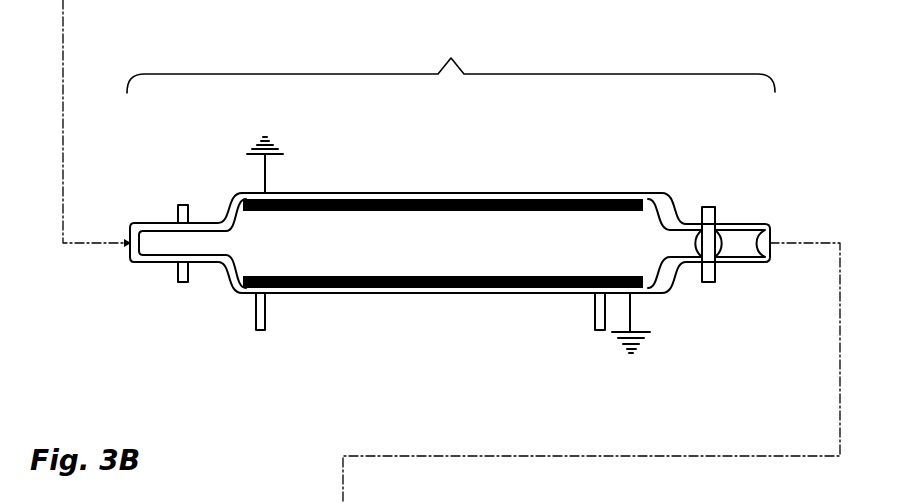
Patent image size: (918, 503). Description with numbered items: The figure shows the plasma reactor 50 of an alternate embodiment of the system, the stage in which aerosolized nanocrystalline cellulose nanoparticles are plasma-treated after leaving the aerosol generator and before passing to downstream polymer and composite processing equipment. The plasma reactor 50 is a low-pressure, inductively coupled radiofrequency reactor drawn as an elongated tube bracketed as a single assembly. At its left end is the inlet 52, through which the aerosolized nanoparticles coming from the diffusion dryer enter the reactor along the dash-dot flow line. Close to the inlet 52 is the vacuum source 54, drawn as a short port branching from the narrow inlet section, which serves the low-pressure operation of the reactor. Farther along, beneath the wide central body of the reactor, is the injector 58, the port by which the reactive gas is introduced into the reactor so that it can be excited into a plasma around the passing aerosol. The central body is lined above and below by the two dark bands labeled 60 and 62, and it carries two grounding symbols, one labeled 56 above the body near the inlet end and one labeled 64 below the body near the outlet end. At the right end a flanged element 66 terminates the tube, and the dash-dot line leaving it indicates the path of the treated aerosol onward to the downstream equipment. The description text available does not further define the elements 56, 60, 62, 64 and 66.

The plasma reactor 50 is at (451, 65).
The inlet 52 is at (152, 248).
The vacuum source 54 is at (183, 195).
The ground connection 56 is at (272, 138).
The injector 58 is at (260, 345).
The upper electrode 60 is at (514, 193).
The lower electrode 62 is at (453, 290).
The ground connection 64 is at (650, 342).
The flange with lens 66 is at (738, 223).